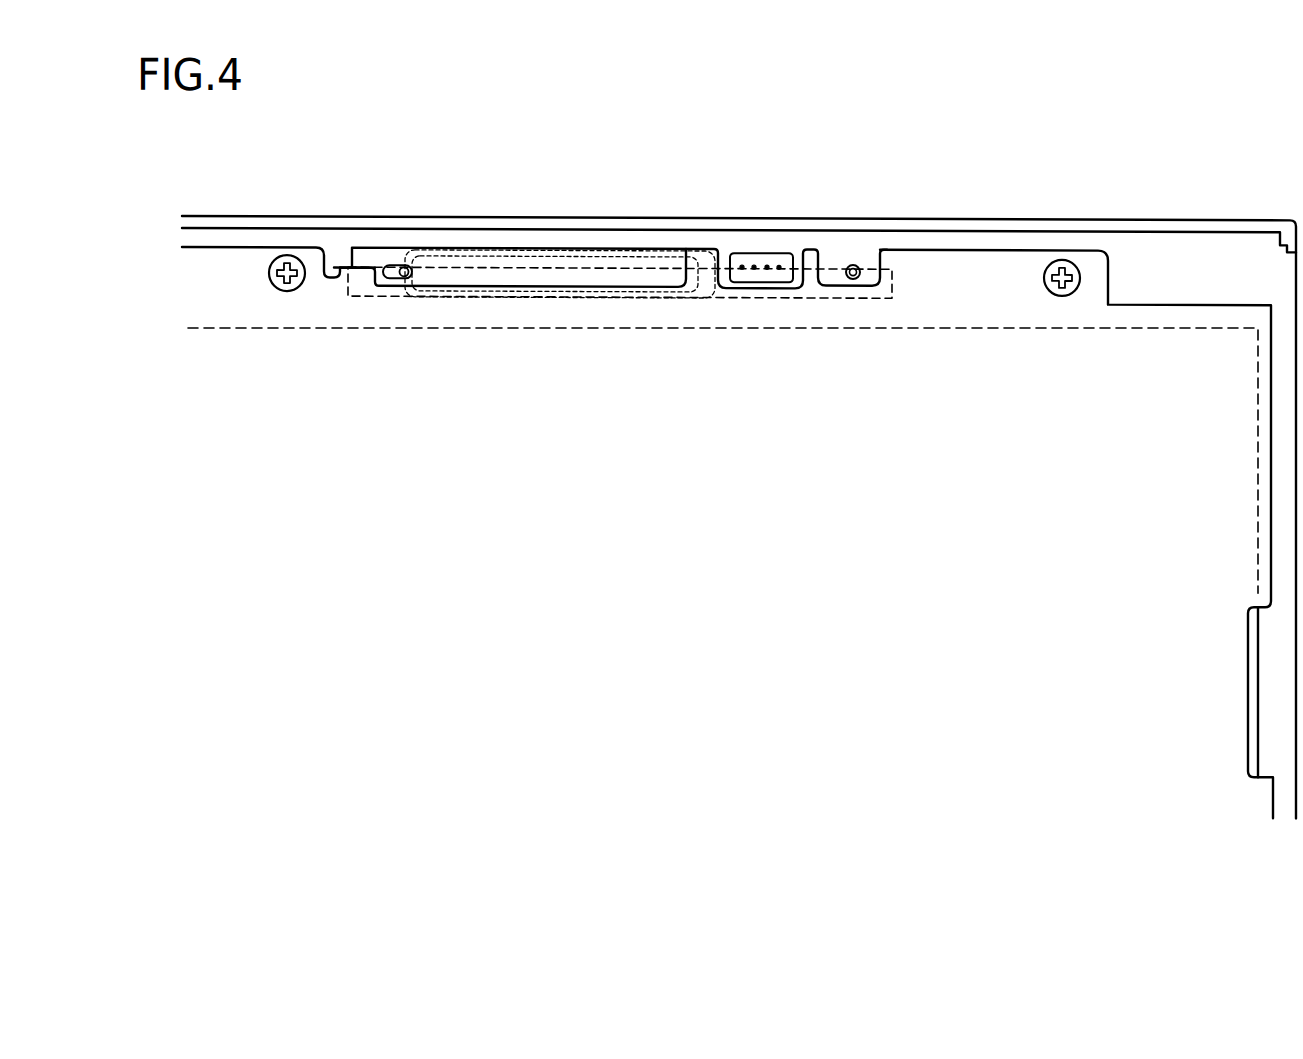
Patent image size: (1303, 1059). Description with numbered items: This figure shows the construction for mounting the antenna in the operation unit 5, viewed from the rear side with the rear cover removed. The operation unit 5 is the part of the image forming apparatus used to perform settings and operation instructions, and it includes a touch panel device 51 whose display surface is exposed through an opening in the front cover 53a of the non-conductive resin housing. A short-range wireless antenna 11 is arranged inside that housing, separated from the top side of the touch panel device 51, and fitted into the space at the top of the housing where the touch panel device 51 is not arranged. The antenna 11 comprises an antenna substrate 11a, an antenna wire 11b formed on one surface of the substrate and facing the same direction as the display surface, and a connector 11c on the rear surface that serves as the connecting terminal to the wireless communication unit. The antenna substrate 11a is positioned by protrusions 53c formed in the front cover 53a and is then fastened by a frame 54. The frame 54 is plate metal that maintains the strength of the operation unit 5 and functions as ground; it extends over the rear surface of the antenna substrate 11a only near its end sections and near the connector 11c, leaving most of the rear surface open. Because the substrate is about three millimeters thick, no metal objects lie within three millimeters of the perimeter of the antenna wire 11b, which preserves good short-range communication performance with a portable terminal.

The operation unit 5 is at (1050, 164).
The short-range wireless antenna 11 is at (602, 211).
The antenna substrate 11a is at (367, 249).
The antenna wire 11b is at (529, 266).
The connector 11c is at (762, 266).
The touch panel device 51 is at (240, 328).
The front cover 53a is at (907, 214).
The protrusions 53c is at (404, 264).
The frame 54 is at (1087, 266).